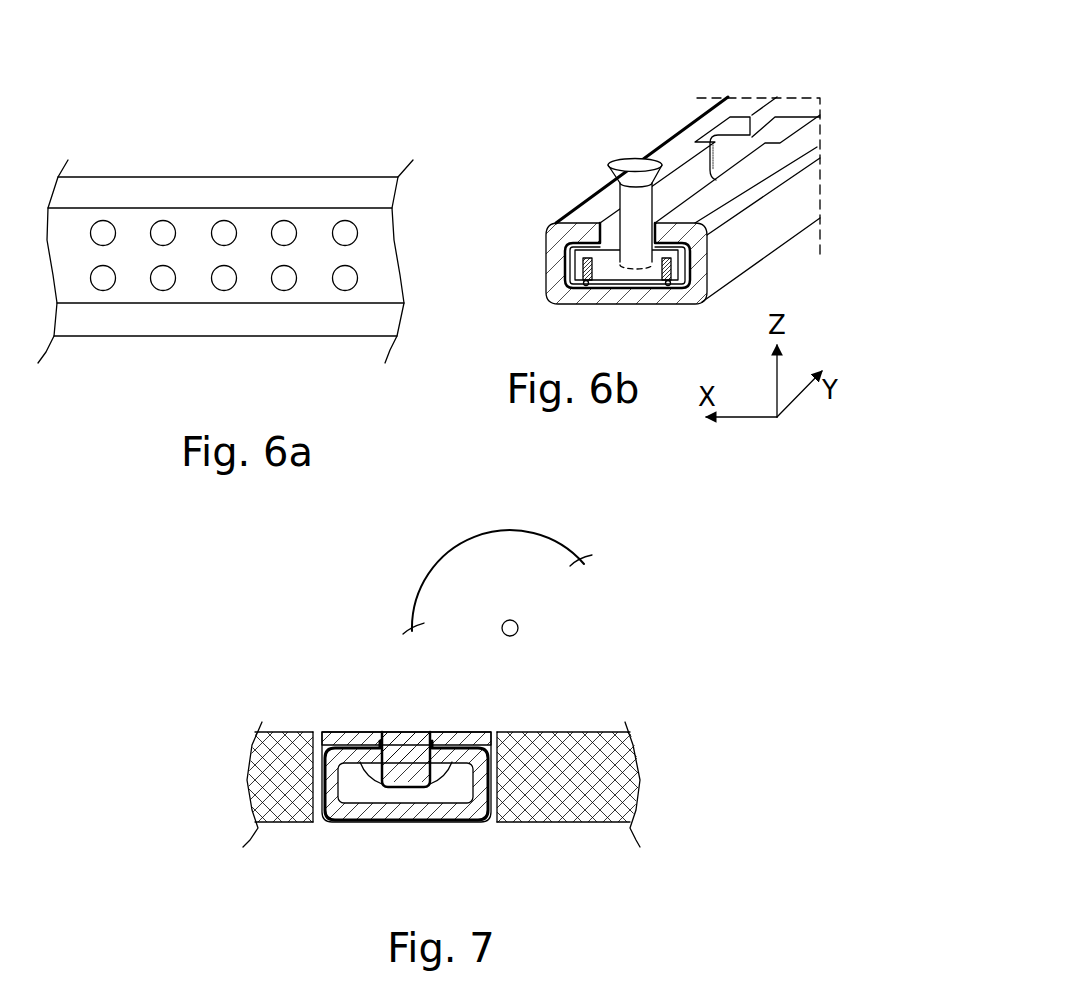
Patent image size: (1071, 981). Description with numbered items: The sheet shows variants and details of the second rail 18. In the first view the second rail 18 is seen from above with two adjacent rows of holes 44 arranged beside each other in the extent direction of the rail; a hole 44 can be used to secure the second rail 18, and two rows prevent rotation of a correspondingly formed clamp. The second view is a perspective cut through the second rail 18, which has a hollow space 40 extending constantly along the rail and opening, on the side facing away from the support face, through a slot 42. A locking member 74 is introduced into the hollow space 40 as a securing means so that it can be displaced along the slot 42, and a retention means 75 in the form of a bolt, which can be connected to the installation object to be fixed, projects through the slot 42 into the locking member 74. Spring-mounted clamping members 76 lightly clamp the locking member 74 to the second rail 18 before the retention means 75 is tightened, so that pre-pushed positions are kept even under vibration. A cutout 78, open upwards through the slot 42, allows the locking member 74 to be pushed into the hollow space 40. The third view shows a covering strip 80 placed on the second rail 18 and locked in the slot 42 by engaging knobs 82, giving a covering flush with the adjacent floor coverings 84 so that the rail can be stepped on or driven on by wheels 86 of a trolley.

In FIG. 6a, the second rail 18 is at (358, 181).
In FIG. 6b, the second rail 18 is at (727, 100).
In FIG. 7, the second rail 18 is at (483, 817).
In FIG. 6a, the hole 44 is at (102, 286).
In FIG. 6b, the hollow space 40 is at (567, 272).
In FIG. 6b, the slot 42 is at (677, 163).
In FIG. 7, the slot 42 is at (438, 748).
In FIG. 6b, the locking member 74 is at (610, 275).
In FIG. 6b, the retention means 75 is at (620, 200).
In FIG. 6b, the spring-mounted clamping members 76 is at (663, 287).
In FIG. 6b, the cutout 78 is at (775, 120).
In FIG. 7, the covering strip 80 is at (357, 733).
In FIG. 7, the engaging knobs 82 is at (398, 780).
In FIG. 7, the floor coverings 84 is at (592, 750).
In FIG. 7, the wheels 86 is at (578, 602).